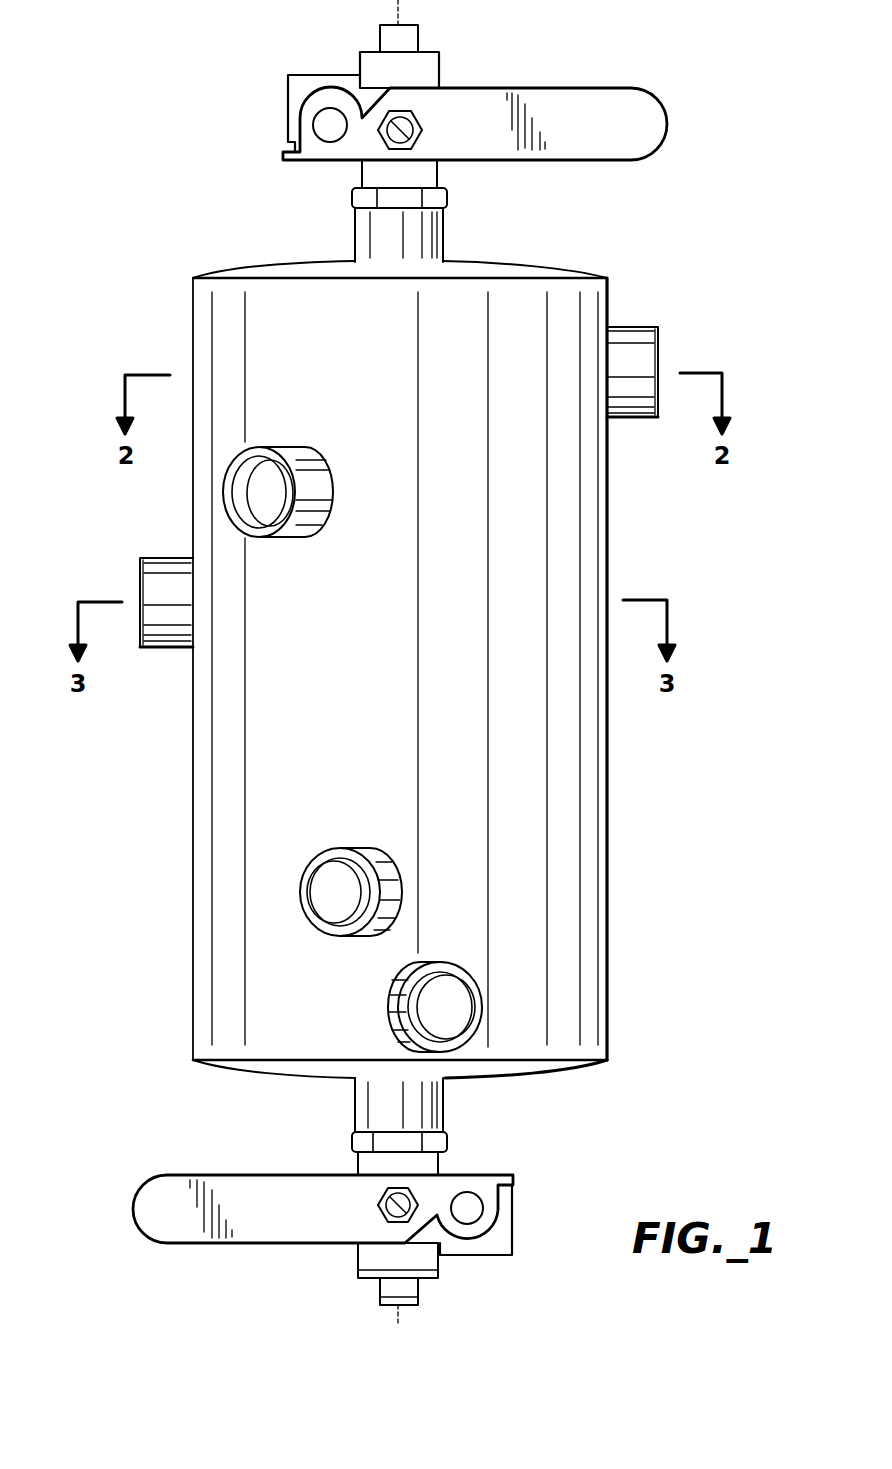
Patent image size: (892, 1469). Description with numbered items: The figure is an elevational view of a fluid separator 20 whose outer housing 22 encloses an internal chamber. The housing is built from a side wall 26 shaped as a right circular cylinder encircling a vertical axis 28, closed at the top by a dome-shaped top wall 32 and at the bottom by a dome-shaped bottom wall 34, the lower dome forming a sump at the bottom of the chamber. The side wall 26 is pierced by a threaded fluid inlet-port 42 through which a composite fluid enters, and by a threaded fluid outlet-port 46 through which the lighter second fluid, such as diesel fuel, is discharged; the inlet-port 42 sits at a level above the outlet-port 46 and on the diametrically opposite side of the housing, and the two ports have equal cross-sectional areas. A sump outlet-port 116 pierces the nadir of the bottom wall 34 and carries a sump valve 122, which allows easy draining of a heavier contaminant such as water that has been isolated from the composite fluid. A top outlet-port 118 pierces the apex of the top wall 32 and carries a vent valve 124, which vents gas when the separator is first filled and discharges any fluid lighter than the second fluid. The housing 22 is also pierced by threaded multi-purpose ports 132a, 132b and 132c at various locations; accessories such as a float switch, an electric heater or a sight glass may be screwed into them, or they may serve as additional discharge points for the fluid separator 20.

The fluid separator 20 is at (640, 1107).
The outer housing 22 is at (337, 377).
The side wall 26 is at (192, 795).
The vertical axis 28 is at (402, 7).
The top wall 32 is at (488, 263).
The bottom wall 34 is at (485, 1078).
The fluid inlet-port 42 is at (622, 325).
The fluid outlet-port 46 is at (175, 555).
The sump outlet-port 116 is at (355, 1105).
The top outlet-port 118 is at (355, 240).
The sump valve 122 is at (445, 1165).
The vent valve 124 is at (440, 172).
The multi-purpose port 132a is at (317, 482).
The multi-purpose port 132b is at (363, 848).
The multi-purpose port 132c is at (395, 1000).